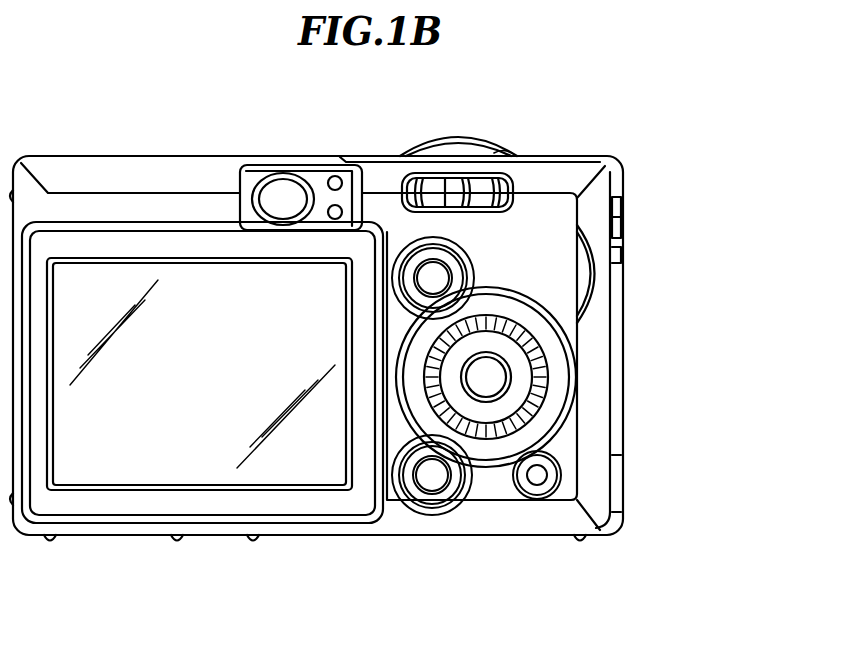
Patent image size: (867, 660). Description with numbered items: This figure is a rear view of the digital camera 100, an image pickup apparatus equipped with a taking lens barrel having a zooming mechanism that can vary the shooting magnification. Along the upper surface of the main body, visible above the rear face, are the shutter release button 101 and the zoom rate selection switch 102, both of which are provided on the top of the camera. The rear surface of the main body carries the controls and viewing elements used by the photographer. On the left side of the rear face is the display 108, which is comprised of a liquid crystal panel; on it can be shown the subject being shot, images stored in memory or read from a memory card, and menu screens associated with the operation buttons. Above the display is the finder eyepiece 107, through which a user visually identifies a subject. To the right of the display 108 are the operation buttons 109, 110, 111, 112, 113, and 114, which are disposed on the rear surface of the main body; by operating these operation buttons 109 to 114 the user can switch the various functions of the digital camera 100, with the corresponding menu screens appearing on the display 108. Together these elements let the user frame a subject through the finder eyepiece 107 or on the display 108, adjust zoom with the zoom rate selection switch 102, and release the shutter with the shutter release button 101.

The digital camera 100 is at (188, 128).
The shutter release button 101 is at (458, 138).
The zoom rate selection switch 102 is at (500, 150).
The finder eyepiece 107 is at (283, 185).
The display 108 is at (272, 470).
The operation button 109 is at (487, 190).
The operation button 110 is at (437, 278).
The operation button 111 is at (490, 377).
The operation button 112 is at (430, 478).
The operation button 113 is at (536, 478).
The operation button 114 is at (530, 402).